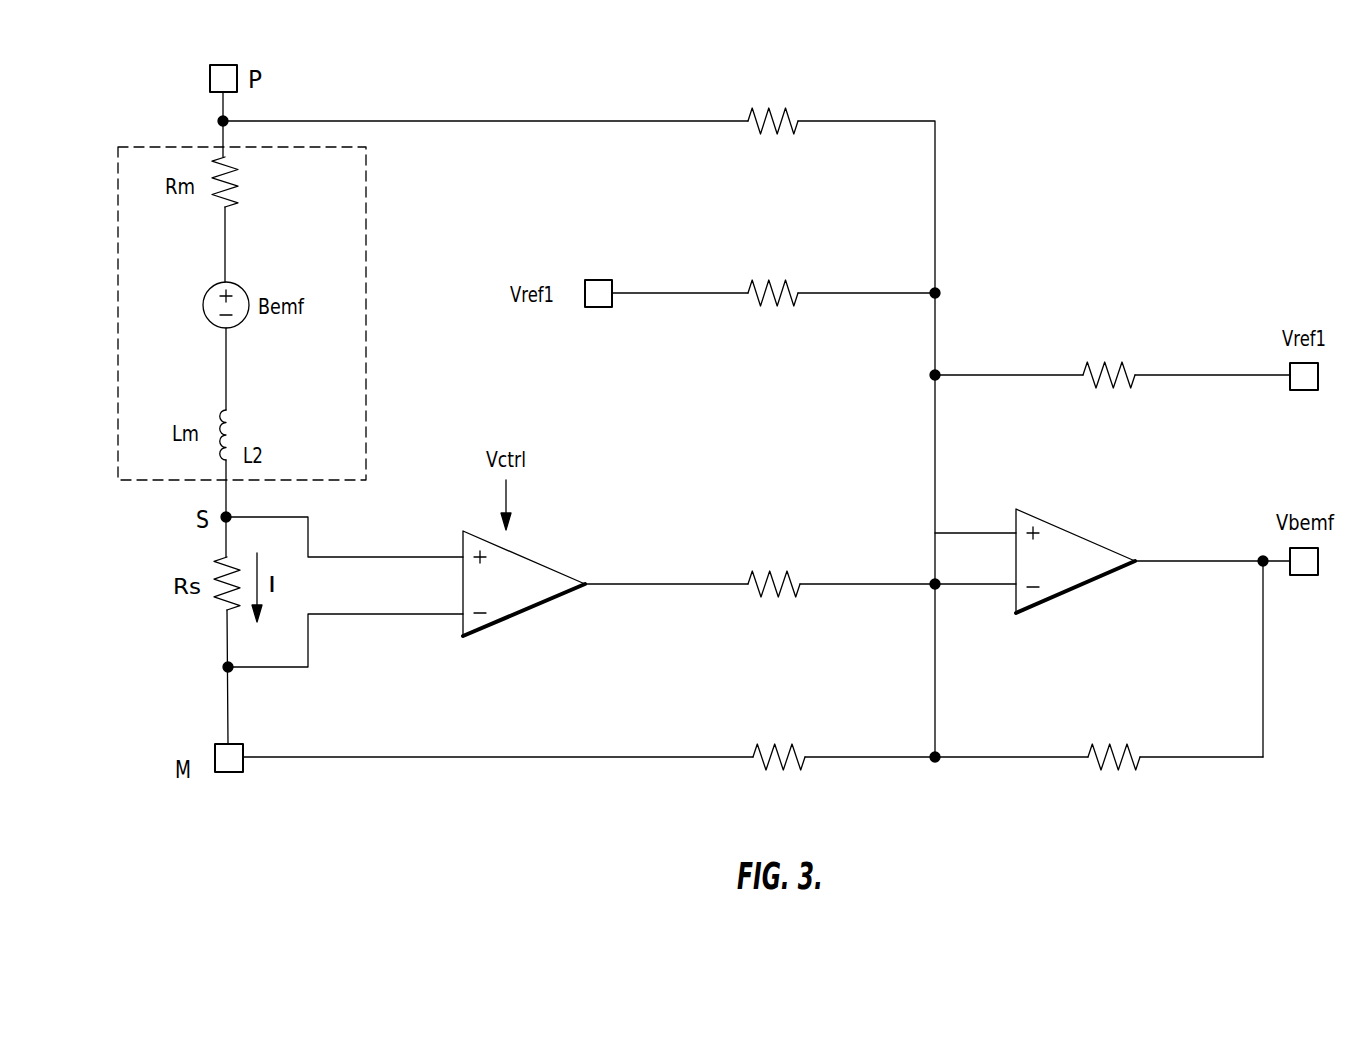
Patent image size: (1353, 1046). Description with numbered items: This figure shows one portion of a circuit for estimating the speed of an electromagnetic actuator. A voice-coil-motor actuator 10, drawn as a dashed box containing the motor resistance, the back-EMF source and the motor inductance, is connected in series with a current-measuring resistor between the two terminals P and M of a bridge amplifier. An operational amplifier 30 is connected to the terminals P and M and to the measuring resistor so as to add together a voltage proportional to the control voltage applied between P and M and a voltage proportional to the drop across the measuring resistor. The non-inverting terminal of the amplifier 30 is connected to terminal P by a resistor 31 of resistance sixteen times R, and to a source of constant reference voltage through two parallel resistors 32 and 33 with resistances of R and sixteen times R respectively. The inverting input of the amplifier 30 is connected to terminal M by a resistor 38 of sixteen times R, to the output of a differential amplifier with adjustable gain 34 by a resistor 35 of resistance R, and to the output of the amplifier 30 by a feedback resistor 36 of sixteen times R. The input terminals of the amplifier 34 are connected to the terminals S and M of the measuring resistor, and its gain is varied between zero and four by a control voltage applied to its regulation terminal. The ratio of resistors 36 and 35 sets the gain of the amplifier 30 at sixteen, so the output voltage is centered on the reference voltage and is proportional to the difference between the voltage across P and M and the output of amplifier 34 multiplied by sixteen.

The VCM actuator 10 is at (366, 260).
The operational amplifier 30 is at (1082, 587).
The resistor 31 is at (770, 112).
The resistor 32 is at (778, 278).
The resistor 33 is at (1108, 368).
The differential amplifier with adjustable gain 34 is at (532, 610).
The resistor 35 is at (755, 573).
The resistor 36 is at (1110, 750).
The resistor 38 is at (763, 745).